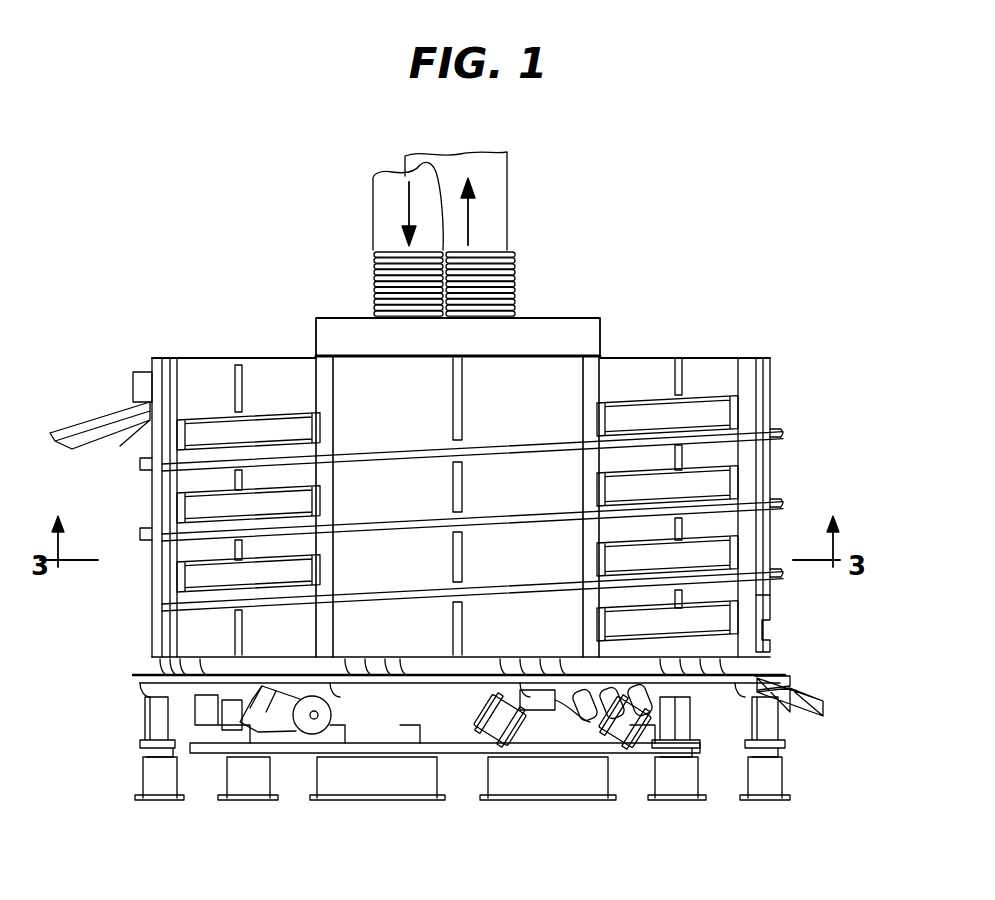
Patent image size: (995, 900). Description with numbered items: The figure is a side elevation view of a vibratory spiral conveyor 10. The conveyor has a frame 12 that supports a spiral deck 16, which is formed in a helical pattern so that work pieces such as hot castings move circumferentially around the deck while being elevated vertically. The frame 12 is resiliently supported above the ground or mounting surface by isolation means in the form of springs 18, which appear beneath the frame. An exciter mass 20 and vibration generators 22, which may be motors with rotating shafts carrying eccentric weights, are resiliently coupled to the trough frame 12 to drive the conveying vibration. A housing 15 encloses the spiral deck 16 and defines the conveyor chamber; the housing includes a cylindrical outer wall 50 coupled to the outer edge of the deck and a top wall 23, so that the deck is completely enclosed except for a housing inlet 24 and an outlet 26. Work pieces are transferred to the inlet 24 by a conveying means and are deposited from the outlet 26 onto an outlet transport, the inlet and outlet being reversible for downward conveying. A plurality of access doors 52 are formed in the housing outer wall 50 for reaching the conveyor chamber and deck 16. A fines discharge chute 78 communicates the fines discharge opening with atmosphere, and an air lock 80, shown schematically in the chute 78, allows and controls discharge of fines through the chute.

The spiral conveyor 10 is at (664, 270).
The frame 12 is at (147, 668).
The housing 15 is at (281, 358).
The spiral deck 16 is at (212, 530).
The springs 18 is at (160, 726).
The exciter mass 20 is at (296, 772).
The vibration generators 22 is at (288, 722).
The top wall 23 is at (205, 356).
The housing inlet 24 is at (785, 609).
The outlet 26 is at (92, 385).
The cylindrical outer wall 50 is at (708, 372).
The access doors 52 is at (723, 410).
The fines discharge chute 78 is at (808, 695).
The air lock 80 is at (797, 672).